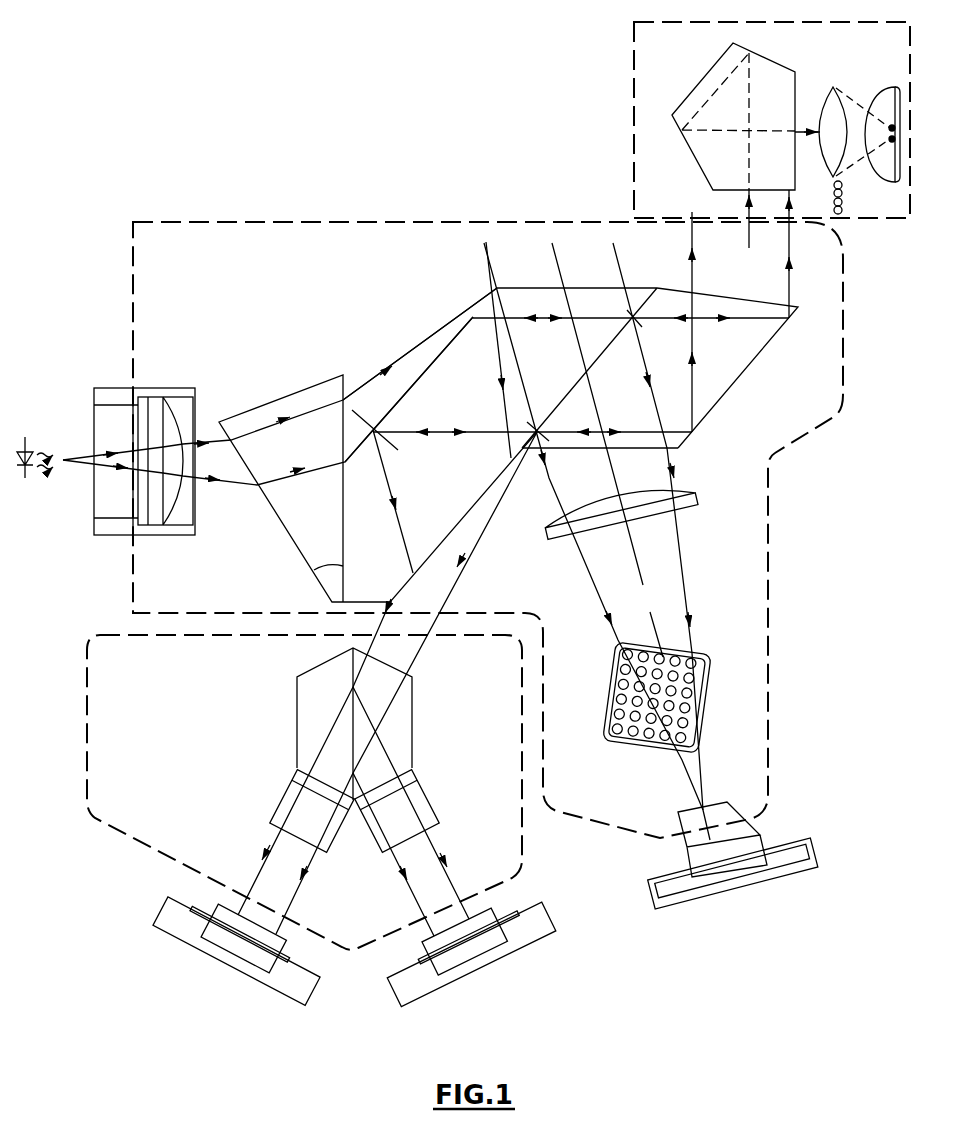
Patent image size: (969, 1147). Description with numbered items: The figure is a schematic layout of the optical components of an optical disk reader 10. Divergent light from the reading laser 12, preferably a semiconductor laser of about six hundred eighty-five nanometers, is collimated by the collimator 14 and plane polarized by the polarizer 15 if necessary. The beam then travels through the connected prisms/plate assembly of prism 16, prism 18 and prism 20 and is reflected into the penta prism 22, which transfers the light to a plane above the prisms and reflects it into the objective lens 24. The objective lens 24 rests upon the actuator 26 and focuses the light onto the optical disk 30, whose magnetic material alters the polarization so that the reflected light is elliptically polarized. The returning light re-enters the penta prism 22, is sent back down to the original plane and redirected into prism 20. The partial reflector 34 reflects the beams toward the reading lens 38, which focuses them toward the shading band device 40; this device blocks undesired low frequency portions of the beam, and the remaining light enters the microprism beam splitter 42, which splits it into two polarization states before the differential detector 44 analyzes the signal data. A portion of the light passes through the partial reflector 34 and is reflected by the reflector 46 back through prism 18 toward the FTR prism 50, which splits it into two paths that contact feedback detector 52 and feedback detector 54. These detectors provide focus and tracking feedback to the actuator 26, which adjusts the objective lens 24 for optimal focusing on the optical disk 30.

The optical disk reader 10 is at (138, 140).
The reading laser 12 is at (32, 470).
The collimator 14 is at (163, 407).
The polarizer 15 is at (193, 410).
The prism 16 is at (280, 392).
The prism 18 is at (592, 330).
The prism 20 is at (726, 372).
The penta prism 22 is at (708, 68).
The objective lens 24 is at (832, 88).
The actuator 26 is at (842, 212).
The optical disk 30 is at (883, 88).
The partial reflector 34 is at (580, 380).
The reading lens 38 is at (697, 503).
The shading band device 40 is at (648, 755).
The microprism beam splitter 42 is at (740, 812).
The differential detector 44 is at (693, 898).
The reflector 46 is at (422, 375).
The FTR prism 50 is at (405, 725).
The feedback detector 52 is at (250, 972).
The feedback detector 54 is at (477, 958).